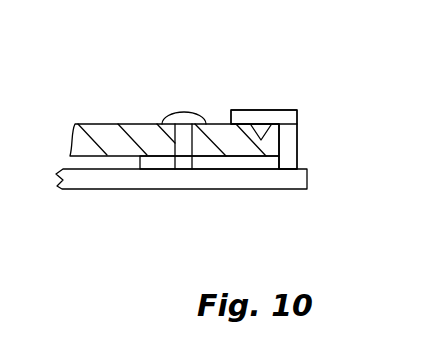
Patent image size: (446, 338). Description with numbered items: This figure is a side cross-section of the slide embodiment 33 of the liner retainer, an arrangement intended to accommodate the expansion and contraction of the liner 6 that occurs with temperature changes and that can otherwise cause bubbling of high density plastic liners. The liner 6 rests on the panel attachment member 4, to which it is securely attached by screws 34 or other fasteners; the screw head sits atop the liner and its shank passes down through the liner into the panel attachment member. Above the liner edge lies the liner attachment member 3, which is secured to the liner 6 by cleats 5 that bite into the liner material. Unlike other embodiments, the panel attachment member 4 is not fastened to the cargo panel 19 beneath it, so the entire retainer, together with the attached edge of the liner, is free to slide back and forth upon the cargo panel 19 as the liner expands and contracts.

The liner attachment member 3 is at (253, 110).
The panel attachment member 4 is at (158, 163).
The cleats 5 is at (280, 128).
The liner 6 is at (108, 124).
The cargo panel 19 is at (263, 190).
The slide embodiment 33 is at (300, 139).
The screws 34 is at (184, 112).